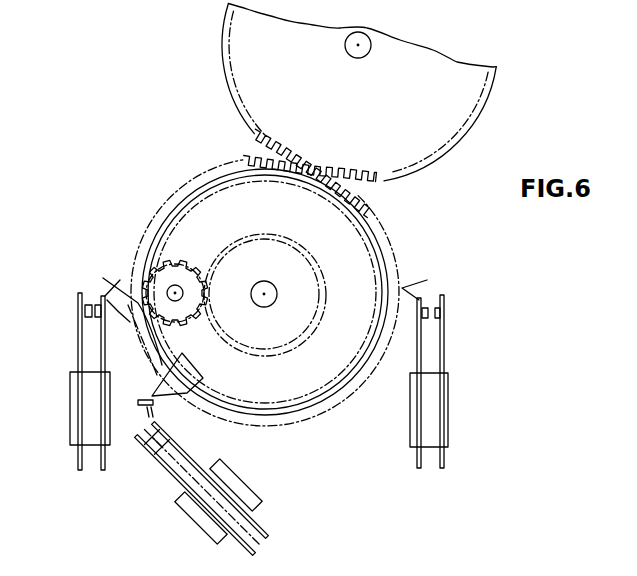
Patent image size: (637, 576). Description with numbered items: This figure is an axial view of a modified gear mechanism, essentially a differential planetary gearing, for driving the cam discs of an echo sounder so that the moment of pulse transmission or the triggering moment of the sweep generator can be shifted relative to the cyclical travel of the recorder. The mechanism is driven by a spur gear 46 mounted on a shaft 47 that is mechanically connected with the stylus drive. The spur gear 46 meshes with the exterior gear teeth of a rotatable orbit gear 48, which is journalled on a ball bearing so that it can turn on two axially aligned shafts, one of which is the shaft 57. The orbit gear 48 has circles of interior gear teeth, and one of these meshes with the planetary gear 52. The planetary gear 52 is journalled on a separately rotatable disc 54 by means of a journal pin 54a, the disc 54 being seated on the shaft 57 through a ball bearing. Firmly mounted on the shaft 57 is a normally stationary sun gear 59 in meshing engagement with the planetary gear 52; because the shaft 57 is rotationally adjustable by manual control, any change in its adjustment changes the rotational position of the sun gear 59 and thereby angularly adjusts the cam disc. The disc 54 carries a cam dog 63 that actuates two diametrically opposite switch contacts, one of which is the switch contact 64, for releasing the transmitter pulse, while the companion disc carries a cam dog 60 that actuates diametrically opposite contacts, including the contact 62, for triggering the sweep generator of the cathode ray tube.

The spur gear 46 is at (440, 67).
The shaft 47 is at (360, 40).
The orbit gear 48 is at (238, 161).
The planetary gear 52 is at (184, 280).
The disc 54 is at (163, 218).
The journal pin 54a is at (204, 289).
The shaft 57 is at (277, 294).
The sun gear 59 is at (273, 349).
The cam dog 60 is at (403, 288).
The contact 62 is at (432, 409).
The cam dog 63 is at (126, 312).
The switch contact 64 is at (88, 408).